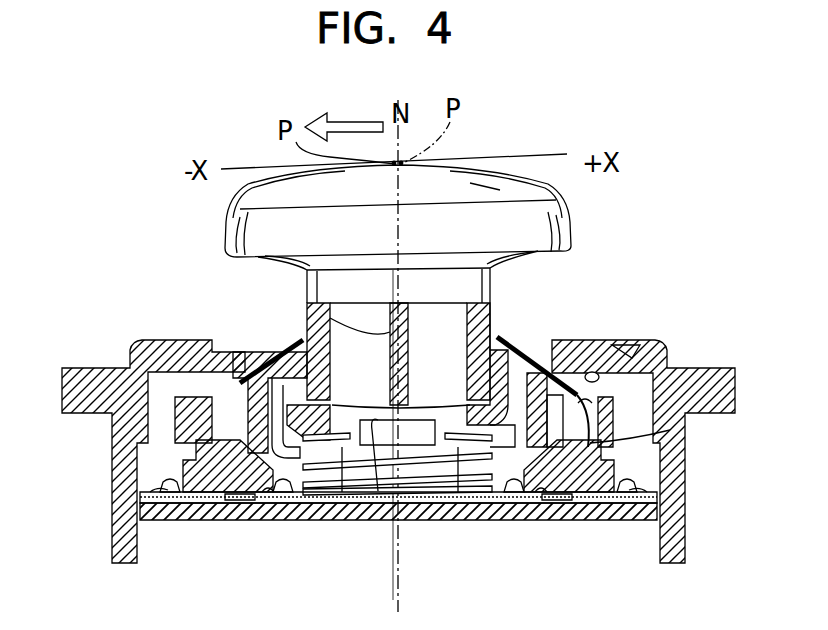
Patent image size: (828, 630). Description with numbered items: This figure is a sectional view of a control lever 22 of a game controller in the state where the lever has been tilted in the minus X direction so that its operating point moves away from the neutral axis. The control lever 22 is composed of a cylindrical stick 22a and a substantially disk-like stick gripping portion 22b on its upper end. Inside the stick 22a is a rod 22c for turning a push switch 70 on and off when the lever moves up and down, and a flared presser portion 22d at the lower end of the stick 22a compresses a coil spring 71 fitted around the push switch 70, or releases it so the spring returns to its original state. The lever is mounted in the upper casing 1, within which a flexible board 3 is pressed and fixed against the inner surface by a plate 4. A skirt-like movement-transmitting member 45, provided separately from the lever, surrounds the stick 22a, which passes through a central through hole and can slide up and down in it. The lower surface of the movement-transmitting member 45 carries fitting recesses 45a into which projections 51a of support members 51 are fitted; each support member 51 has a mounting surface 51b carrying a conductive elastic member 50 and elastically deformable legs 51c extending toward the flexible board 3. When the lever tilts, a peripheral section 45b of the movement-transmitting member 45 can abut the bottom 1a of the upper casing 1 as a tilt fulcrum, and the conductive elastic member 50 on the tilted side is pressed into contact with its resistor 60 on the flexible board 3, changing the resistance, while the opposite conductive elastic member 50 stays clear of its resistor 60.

The upper casing 1 is at (126, 334).
The bottom of the upper casing 1a is at (597, 365).
The flexible board 3 is at (434, 505).
The plate 4 is at (490, 515).
The control lever 22 is at (500, 140).
The stick 22a is at (488, 292).
The stick gripping portion 22b is at (556, 226).
The rod 22c is at (310, 308).
The presser portion 22d is at (267, 352).
The movement-transmitting member 45 is at (505, 325).
The fitting recess 45a is at (590, 395).
The peripheral section 45b is at (632, 340).
The conductive elastic member 50 is at (228, 503).
The support member 51 is at (626, 458).
The projection 51a is at (614, 460).
The mounting surface 51b is at (240, 505).
The leg 51c is at (640, 480).
The resistor 60 is at (268, 505).
The push switch 70 is at (385, 497).
The coil spring 71 is at (355, 505).